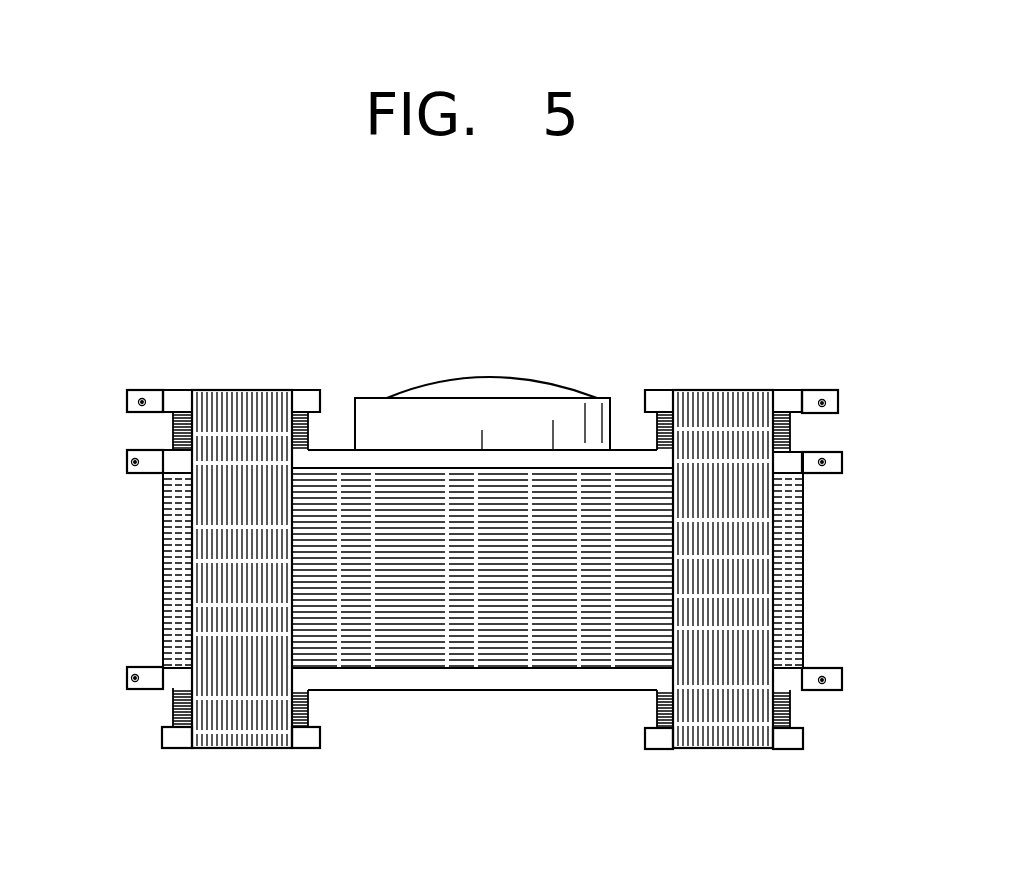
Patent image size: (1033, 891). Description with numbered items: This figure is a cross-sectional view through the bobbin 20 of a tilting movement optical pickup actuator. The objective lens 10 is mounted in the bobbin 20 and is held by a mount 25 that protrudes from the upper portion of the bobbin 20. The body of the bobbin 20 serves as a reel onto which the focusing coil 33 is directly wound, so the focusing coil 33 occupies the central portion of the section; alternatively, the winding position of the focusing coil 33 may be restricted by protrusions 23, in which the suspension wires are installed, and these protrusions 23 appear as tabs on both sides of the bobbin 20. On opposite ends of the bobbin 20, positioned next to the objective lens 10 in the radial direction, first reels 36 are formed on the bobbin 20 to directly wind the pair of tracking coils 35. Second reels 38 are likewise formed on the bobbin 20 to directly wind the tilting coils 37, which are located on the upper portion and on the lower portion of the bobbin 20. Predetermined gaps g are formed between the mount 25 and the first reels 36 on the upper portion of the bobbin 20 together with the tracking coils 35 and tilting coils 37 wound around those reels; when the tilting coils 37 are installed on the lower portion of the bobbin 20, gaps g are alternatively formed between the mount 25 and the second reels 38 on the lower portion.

The objective lens 10 is at (482, 380).
The bobbin 20 is at (387, 440).
The mount 25 is at (593, 398).
The protrusions 23 is at (125, 473).
The focusing coil 33 is at (485, 630).
The tracking coils 35 is at (242, 390).
The first reels 36 is at (178, 390).
The tilting coils 37 is at (173, 428).
The second reels 38 is at (163, 742).
The gaps g is at (330, 397).